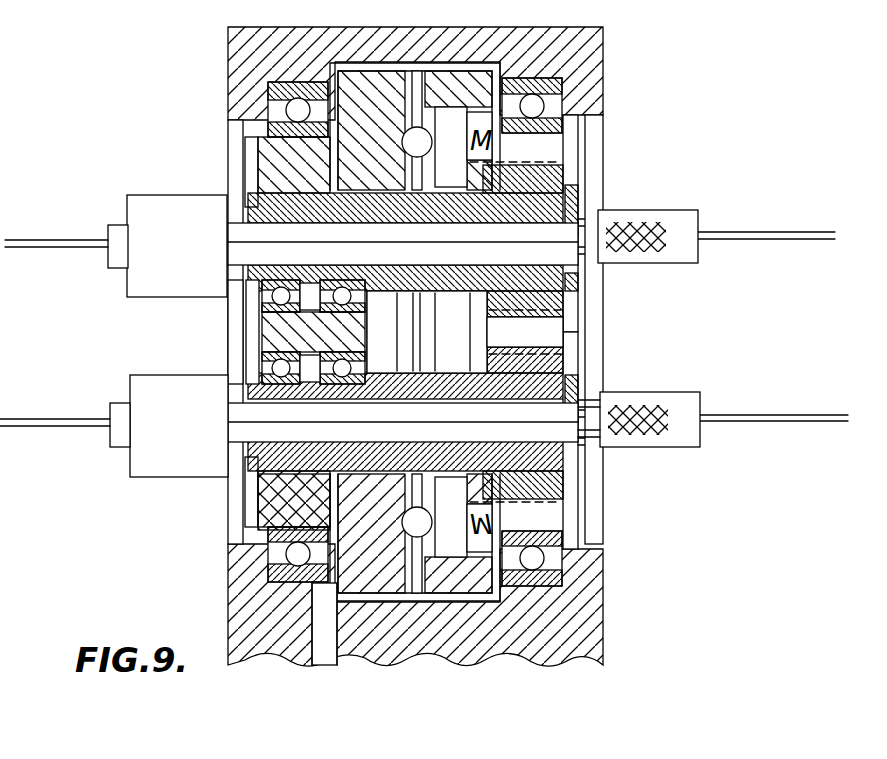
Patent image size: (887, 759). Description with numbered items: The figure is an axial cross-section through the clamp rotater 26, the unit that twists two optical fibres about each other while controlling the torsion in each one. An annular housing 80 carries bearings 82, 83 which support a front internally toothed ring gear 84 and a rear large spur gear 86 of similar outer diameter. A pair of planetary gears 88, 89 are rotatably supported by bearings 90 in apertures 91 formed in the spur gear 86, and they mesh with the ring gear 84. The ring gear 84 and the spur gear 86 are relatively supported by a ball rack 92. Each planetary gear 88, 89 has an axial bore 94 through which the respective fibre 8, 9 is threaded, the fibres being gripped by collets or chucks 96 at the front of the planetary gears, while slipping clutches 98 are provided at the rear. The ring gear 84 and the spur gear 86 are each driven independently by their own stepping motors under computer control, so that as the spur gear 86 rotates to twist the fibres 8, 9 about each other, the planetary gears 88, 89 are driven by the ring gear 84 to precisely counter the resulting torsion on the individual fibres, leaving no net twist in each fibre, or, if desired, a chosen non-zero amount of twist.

The fibre 8 is at (805, 423).
The fibre 9 is at (765, 235).
The clamp rotater 26 is at (655, 88).
The annular housing 80 is at (572, 636).
The bearing 82 is at (550, 578).
The bearing 83 is at (265, 572).
The internally toothed ring gear 84 is at (560, 505).
The spur gear 86 is at (285, 510).
The planetary gear 88 is at (565, 358).
The planetary gear 89 is at (578, 287).
The bearings 90 is at (262, 342).
The apertures 91 is at (300, 437).
The ball rack 92 is at (408, 548).
The axial bores 94 is at (570, 400).
The collets or chucks 96 is at (675, 428).
The slipping clutches 98 is at (160, 378).